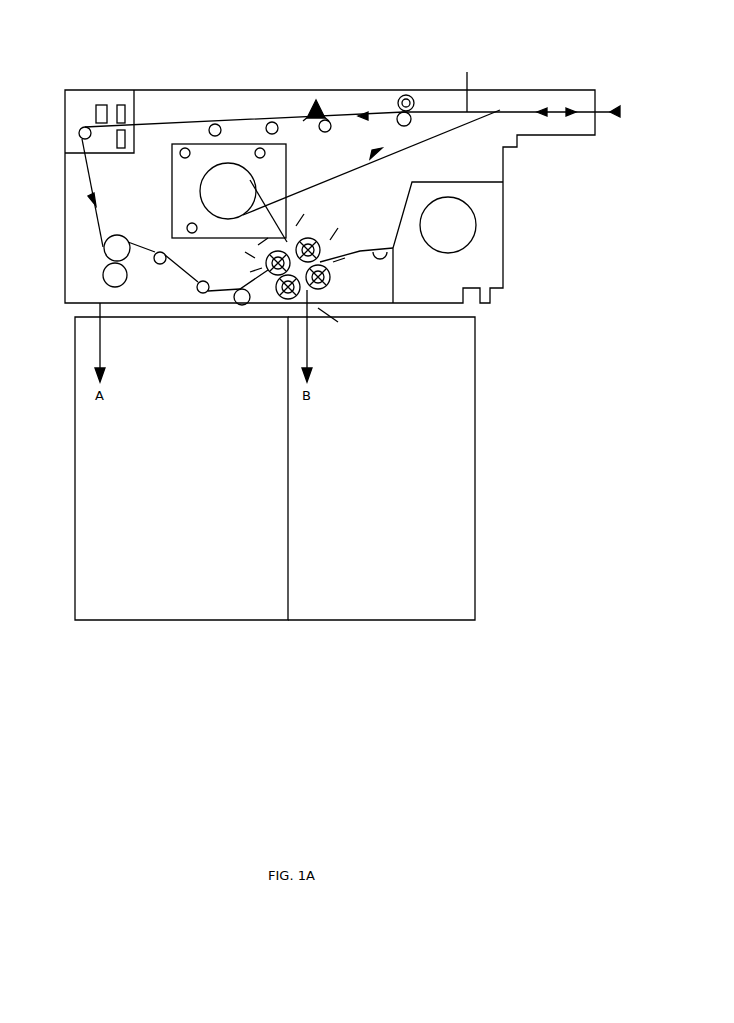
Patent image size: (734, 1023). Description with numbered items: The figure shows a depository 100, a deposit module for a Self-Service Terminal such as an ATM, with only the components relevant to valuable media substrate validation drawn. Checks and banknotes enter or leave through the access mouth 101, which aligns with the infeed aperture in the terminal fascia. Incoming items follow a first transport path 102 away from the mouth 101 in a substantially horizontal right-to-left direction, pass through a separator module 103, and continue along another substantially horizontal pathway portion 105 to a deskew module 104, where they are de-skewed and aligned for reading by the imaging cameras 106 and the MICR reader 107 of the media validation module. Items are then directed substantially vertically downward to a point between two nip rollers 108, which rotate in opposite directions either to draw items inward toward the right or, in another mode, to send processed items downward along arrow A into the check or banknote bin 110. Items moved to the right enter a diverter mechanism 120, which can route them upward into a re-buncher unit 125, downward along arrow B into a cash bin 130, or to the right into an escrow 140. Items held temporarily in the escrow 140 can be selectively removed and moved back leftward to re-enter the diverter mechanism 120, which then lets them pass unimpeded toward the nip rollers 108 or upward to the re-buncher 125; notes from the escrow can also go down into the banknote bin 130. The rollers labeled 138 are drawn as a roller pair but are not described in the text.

The depository 100 is at (200, 88).
The access mouth 101 is at (617, 110).
The first transport path 102 is at (448, 90).
The separator module 103 is at (400, 97).
The deskew module 104 is at (316, 100).
The pathway portion 105 is at (242, 123).
The imaging cameras 106 is at (121, 104).
The Magnetic Ink Character Recognition reader 107 is at (101, 103).
The nip rollers 108 is at (120, 275).
The check or banknote bin 110 is at (198, 500).
The diverter mechanism 120 is at (318, 238).
The re-buncher unit 125 is at (297, 162).
The cash bin 130 is at (386, 500).
The exit roller pair 138 is at (110, 232).
The escrow 140 is at (497, 223).